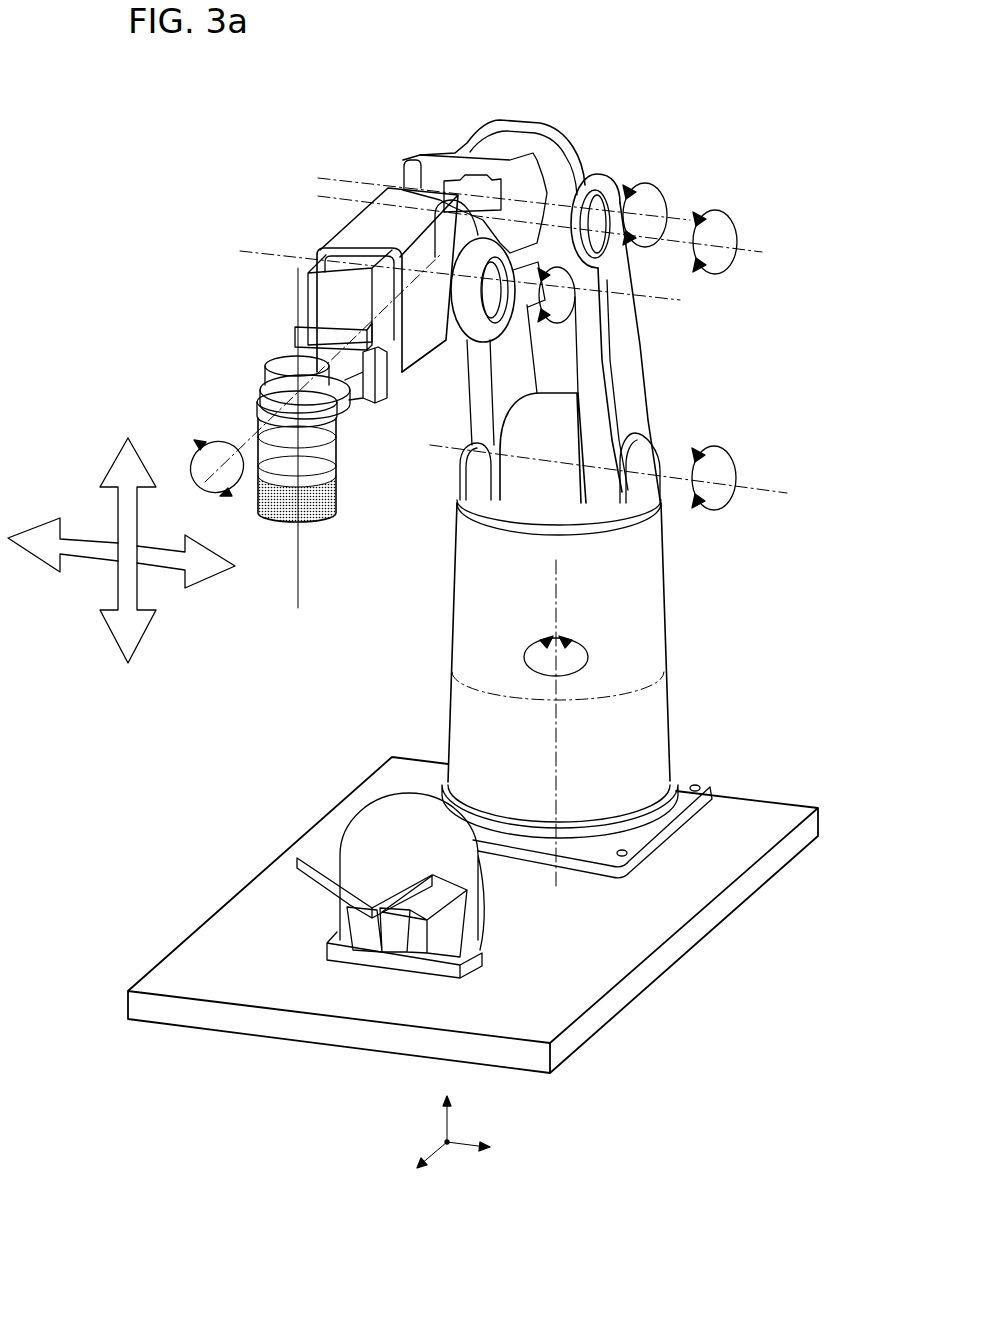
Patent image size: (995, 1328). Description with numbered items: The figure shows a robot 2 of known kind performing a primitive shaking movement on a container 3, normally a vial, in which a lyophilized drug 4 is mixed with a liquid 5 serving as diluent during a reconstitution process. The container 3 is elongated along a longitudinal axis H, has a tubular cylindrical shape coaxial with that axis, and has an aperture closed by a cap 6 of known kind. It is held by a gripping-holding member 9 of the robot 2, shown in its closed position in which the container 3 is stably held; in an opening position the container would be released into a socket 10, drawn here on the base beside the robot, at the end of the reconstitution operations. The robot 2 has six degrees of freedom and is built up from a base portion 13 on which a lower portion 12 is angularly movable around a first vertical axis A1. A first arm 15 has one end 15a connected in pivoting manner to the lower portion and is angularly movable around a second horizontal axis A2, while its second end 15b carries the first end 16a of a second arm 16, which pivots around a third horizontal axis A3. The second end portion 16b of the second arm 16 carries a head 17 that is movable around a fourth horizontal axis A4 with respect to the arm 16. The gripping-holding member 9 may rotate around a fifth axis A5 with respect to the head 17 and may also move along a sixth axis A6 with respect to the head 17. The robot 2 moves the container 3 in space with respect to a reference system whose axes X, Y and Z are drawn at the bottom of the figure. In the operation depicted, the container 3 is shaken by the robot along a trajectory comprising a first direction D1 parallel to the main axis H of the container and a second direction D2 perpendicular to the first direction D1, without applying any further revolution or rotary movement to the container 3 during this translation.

The robot 2 is at (667, 145).
The container 3 is at (312, 522).
The lyophilized drug 4 is at (337, 503).
The liquid 5 is at (260, 450).
The cap 6 is at (290, 360).
The gripping-holding member 9 is at (292, 332).
The socket 10 is at (367, 818).
The lower portion 12 is at (660, 723).
The base portion 13 is at (607, 968).
The first arm 15 is at (622, 333).
The one end of first arm 15a is at (632, 418).
The second end of first arm 15b is at (607, 192).
The second arm 16 is at (488, 148).
The first end of second arm 16a is at (565, 130).
The second end portion of second arm 16b is at (403, 183).
The head 17 is at (370, 233).
The first vertical axis A1 is at (553, 563).
The second horizontal axis A2 is at (787, 495).
The third horizontal axis A3 is at (740, 252).
The fourth horizontal axis A4 is at (688, 200).
The fifth axis A5 is at (630, 302).
The sixth axis A6 is at (190, 460).
The first direction D1 is at (118, 508).
The second direction D2 is at (163, 565).
The longitudinal axis H is at (298, 582).
The reference system axis X is at (424, 1161).
The reference system axis Y is at (476, 1148).
The reference system axis Z is at (445, 1106).